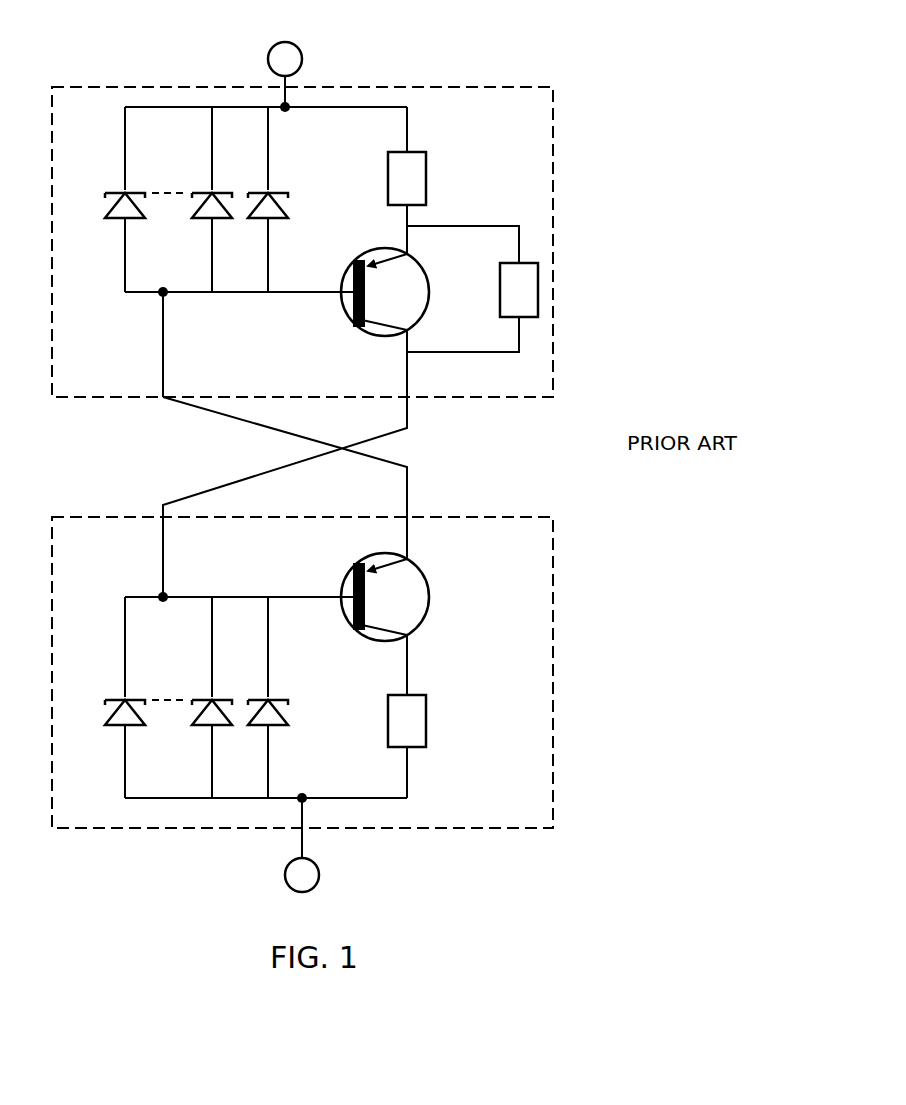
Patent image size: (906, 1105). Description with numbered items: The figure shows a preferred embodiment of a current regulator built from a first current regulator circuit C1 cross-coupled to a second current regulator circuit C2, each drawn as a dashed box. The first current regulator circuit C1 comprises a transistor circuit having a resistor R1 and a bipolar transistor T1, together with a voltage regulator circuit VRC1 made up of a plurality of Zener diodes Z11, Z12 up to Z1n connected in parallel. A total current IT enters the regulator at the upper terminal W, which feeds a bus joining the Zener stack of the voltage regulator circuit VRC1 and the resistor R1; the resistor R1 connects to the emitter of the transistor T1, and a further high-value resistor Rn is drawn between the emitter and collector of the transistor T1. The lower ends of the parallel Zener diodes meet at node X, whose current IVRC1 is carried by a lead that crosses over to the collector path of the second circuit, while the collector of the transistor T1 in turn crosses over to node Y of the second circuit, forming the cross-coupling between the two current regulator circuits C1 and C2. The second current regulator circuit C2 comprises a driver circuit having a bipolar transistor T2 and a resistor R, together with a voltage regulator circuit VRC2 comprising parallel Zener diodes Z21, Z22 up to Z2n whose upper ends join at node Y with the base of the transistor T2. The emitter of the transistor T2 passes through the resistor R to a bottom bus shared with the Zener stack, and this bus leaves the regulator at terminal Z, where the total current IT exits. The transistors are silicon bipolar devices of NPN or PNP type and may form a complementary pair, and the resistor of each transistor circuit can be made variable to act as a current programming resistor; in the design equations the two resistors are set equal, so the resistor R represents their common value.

The first current regulator circuit C1 is at (580, 117).
The second current regulator circuit C2 is at (322, 667).
The terminal W is at (297, 77).
The node X is at (172, 342).
The node Y is at (169, 586).
The terminal Z is at (306, 842).
The total current IT is at (339, 908).
The current through voltage reference chain 1 IVRC1 is at (177, 357).
The voltage regulator circuit VRC1 is at (146, 308).
The voltage regulator circuit VRC2 is at (106, 615).
The Zener diode Z1n is at (135, 225).
The Zener diode Z12 is at (224, 225).
The Zener diode Z11 is at (280, 225).
The Zener diode Z2n is at (135, 732).
The Zener diode Z22 is at (224, 732).
The Zener diode Z21 is at (280, 732).
The resistor R1 is at (424, 180).
The resistor R is at (418, 716).
The high-value resistor Rn is at (531, 289).
The bipolar transistor T1 is at (395, 318).
The bipolar transistor T2 is at (395, 584).